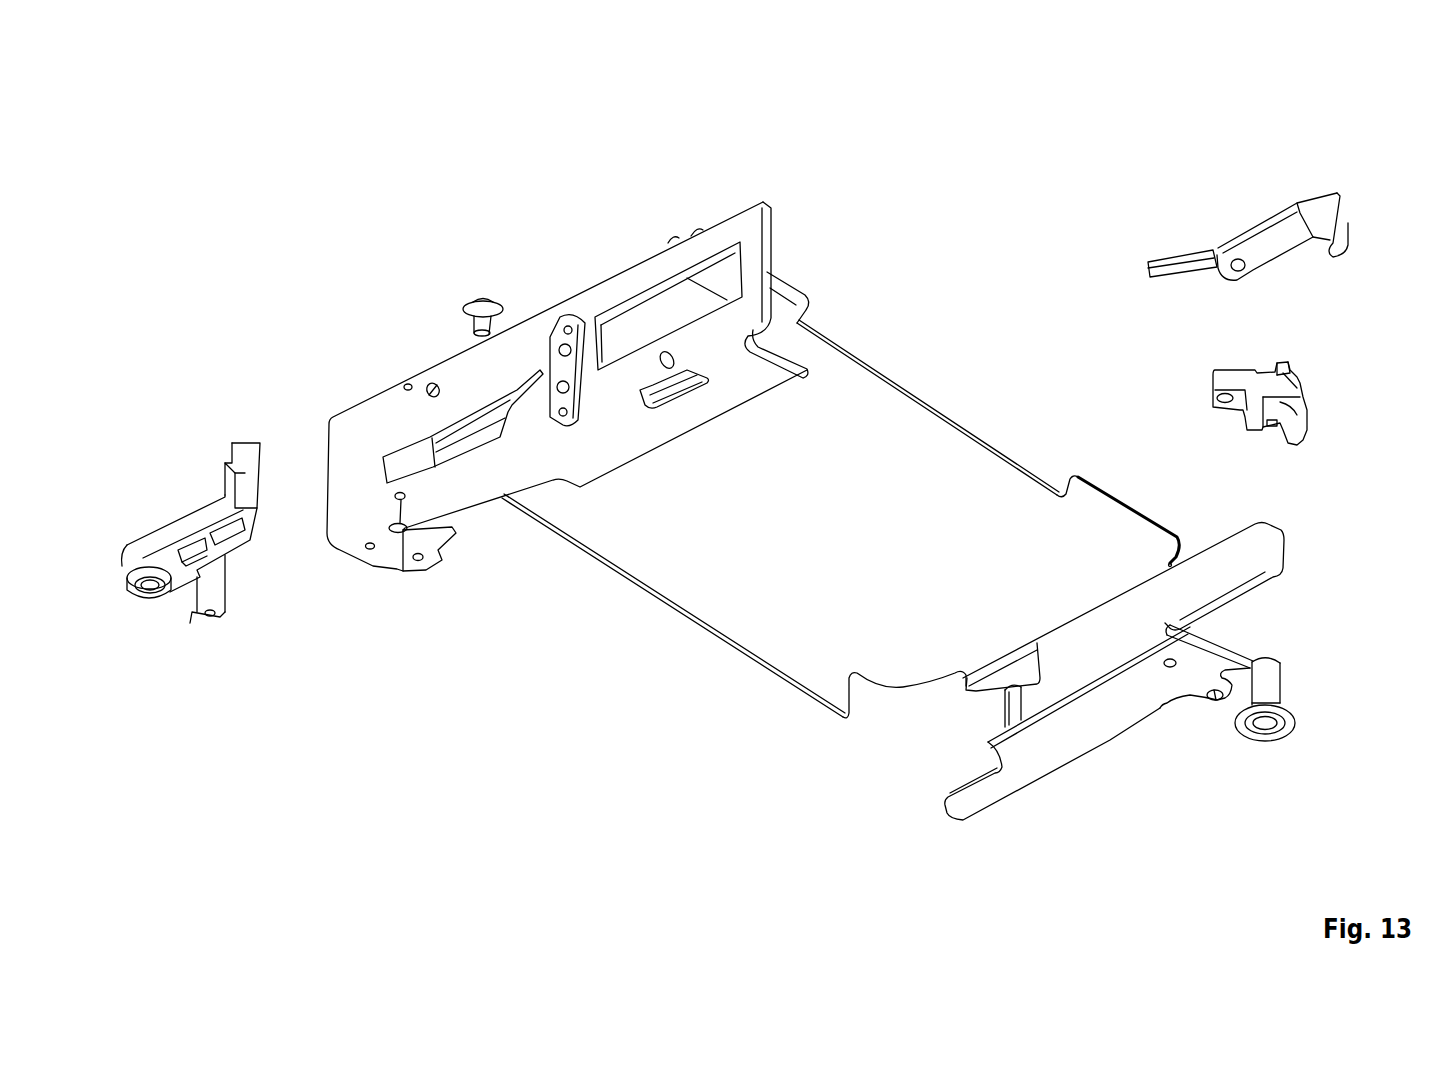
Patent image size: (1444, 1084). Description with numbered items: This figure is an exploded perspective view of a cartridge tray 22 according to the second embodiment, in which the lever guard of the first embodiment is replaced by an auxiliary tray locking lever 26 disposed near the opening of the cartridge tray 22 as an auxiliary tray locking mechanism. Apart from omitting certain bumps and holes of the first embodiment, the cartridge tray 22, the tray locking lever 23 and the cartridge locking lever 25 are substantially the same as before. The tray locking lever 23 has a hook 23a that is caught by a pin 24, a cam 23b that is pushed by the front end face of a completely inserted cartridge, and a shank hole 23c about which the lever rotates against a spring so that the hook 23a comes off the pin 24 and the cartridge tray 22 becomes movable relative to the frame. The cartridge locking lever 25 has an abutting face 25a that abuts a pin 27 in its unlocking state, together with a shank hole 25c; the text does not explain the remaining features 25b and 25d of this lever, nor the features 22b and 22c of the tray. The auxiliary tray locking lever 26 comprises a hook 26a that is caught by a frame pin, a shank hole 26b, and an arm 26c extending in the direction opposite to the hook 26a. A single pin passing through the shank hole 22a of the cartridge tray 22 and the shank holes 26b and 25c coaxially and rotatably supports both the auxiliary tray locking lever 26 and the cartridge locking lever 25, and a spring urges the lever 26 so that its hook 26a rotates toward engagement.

The cartridge tray 22 is at (805, 544).
The shank hole 22a is at (1218, 703).
The guide rail 22b is at (1160, 702).
The screw 22c is at (398, 533).
The tray locking lever 23 is at (198, 528).
The hook 23a is at (247, 455).
The cam 23b is at (220, 582).
The shank hole 23c is at (150, 600).
The pin 24 is at (478, 300).
The cartridge locking lever 25 is at (1284, 378).
The abutting face 25a is at (1307, 383).
The latch tab 25b is at (1297, 370).
The shank hole 25c is at (1215, 408).
The latch slot 25d is at (1280, 440).
The auxiliary tray locking lever 26 is at (1272, 197).
The hook 26a is at (1348, 223).
The shank hole 26b is at (1230, 285).
The arm 26c is at (1168, 253).
The pin 27 is at (1281, 687).